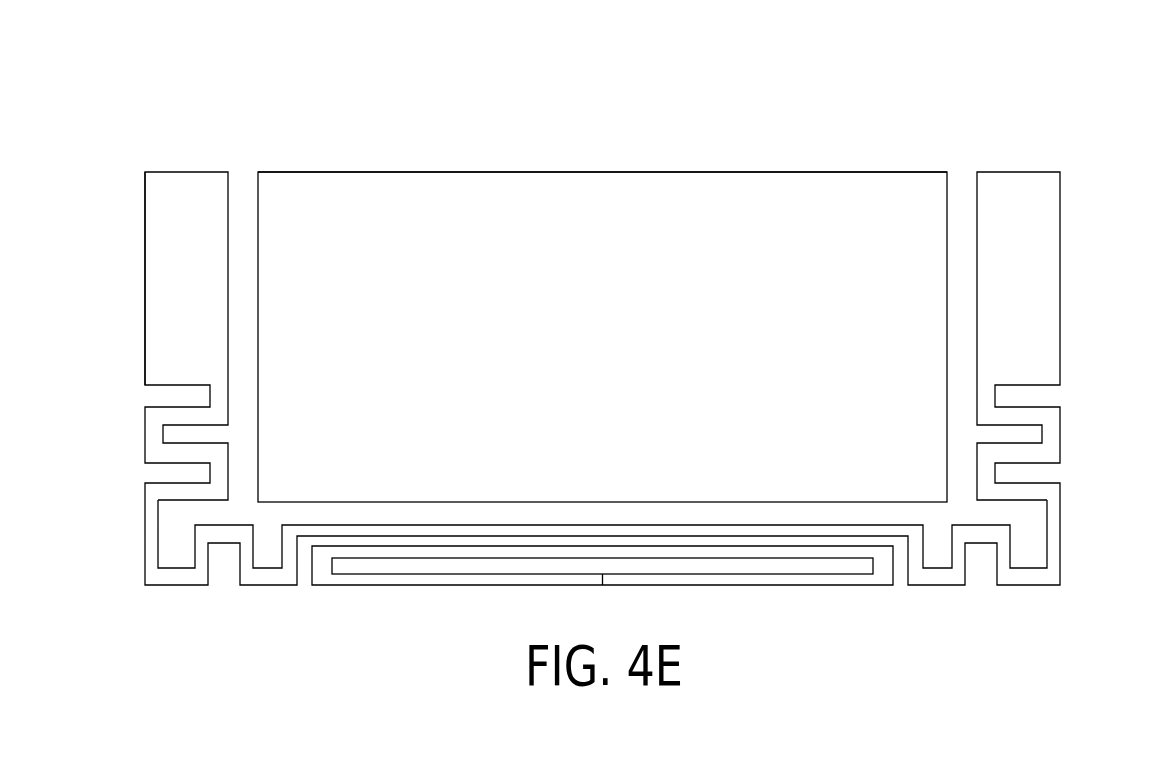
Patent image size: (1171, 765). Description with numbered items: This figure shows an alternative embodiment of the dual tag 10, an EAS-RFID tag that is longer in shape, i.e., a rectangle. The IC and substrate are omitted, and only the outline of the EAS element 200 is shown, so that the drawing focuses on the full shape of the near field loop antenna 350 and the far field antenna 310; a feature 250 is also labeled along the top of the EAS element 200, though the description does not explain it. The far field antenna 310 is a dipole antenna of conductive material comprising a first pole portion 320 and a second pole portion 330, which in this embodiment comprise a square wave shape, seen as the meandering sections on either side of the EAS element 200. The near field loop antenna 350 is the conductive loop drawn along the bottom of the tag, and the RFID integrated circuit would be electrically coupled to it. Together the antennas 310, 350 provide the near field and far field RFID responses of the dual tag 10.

The dual tag 10 is at (261, 122).
The EAS element 200 is at (676, 181).
The top edge of substrate 250 is at (836, 180).
The far field antenna 310 is at (160, 233).
The first pole portion 320 is at (145, 278).
The second pole portion 330 is at (1040, 243).
The near field loop antenna 350 is at (855, 580).